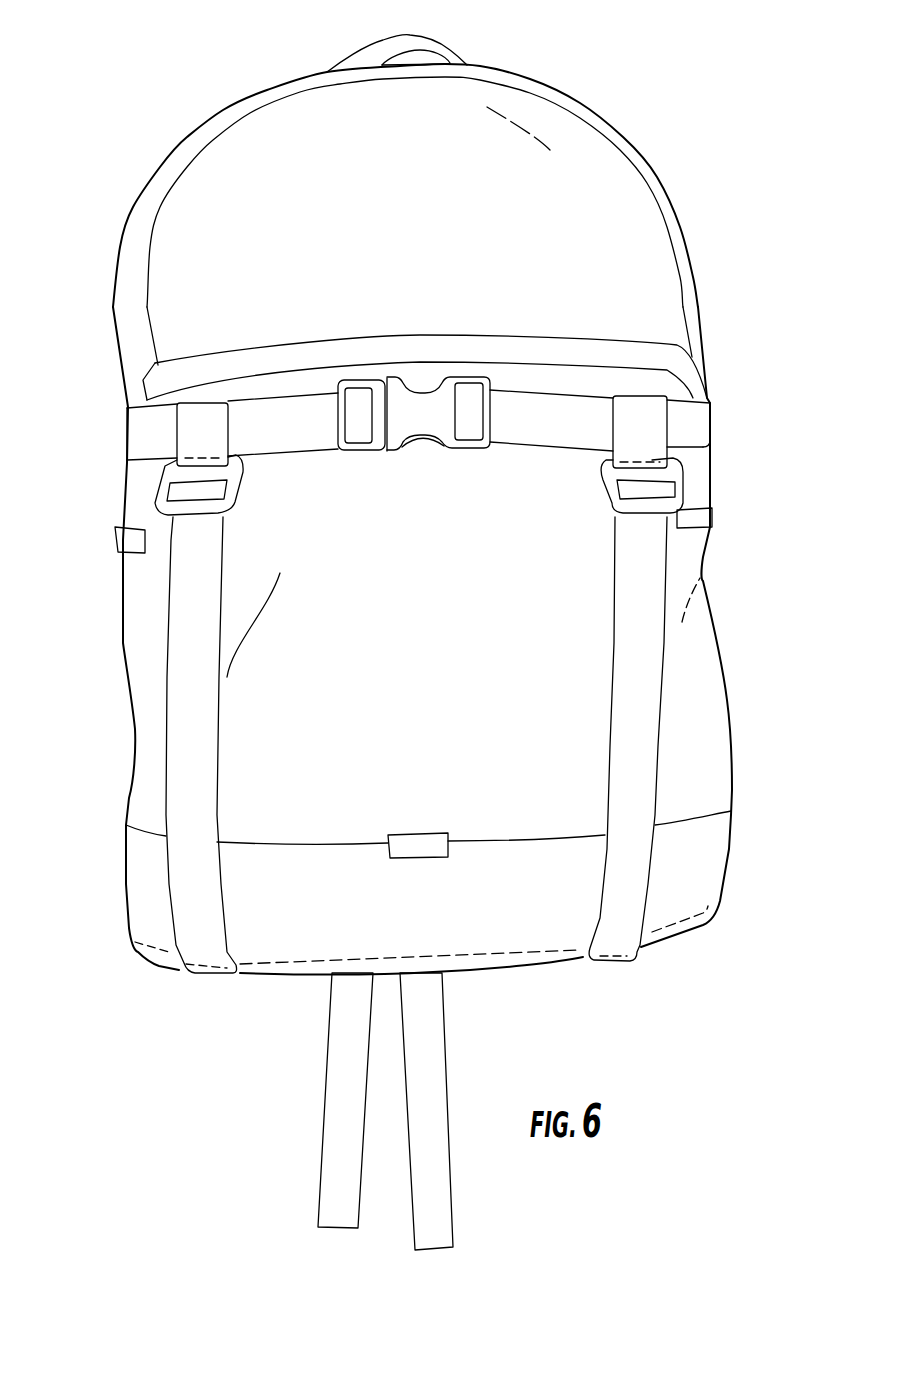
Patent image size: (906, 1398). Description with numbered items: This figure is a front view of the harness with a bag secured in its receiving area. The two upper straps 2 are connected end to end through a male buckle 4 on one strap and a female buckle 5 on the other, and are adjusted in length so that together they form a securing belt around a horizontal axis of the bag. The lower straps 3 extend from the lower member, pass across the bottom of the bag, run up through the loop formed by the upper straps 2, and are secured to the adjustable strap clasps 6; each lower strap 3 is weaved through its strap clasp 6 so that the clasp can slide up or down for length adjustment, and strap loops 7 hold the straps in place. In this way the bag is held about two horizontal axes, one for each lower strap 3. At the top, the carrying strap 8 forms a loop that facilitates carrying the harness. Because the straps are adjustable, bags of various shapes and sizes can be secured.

The upper strap 2 is at (538, 453).
The lower strap 3 is at (157, 672).
The male buckle 4 is at (370, 372).
The female buckle 5 is at (457, 368).
The strap clasp 6 is at (137, 495).
The strap loop 7 is at (158, 465).
The carrying strap 8 is at (447, 43).